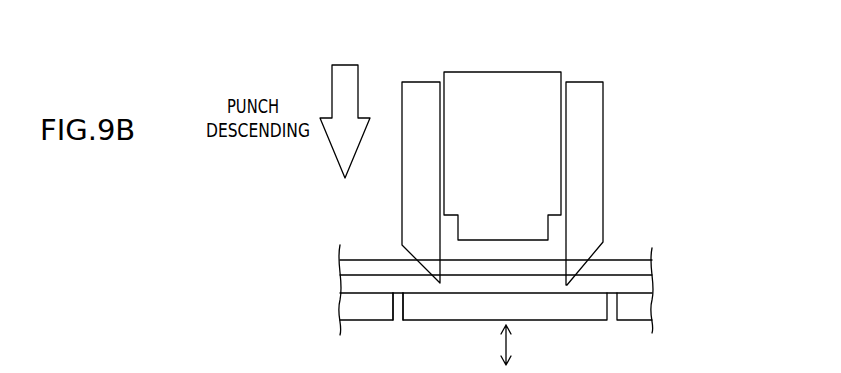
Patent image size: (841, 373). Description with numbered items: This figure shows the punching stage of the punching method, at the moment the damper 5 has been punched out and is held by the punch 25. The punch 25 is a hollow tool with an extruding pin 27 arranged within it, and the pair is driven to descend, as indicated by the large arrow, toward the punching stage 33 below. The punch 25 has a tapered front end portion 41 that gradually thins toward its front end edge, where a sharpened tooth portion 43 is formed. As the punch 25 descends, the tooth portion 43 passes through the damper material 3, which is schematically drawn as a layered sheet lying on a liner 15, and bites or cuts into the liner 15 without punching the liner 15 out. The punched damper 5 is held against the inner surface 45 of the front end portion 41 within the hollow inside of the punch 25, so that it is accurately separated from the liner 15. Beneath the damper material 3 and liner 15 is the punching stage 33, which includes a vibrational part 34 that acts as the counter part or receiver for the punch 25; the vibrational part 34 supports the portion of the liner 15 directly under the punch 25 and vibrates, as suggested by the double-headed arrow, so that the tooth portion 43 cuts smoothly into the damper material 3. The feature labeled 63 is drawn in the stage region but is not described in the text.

The damper material 3 is at (643, 268).
The damper 5 is at (556, 258).
The liner 15 is at (356, 288).
The punch 25 is at (580, 105).
The extruding pin 27 is at (522, 105).
The punching stage 33 is at (348, 310).
The vibrational part 34 is at (547, 322).
The front end portion 41 is at (604, 247).
The tooth portion 43 is at (440, 283).
The inner surface 45 is at (437, 247).
The slot 63 is at (381, 293).